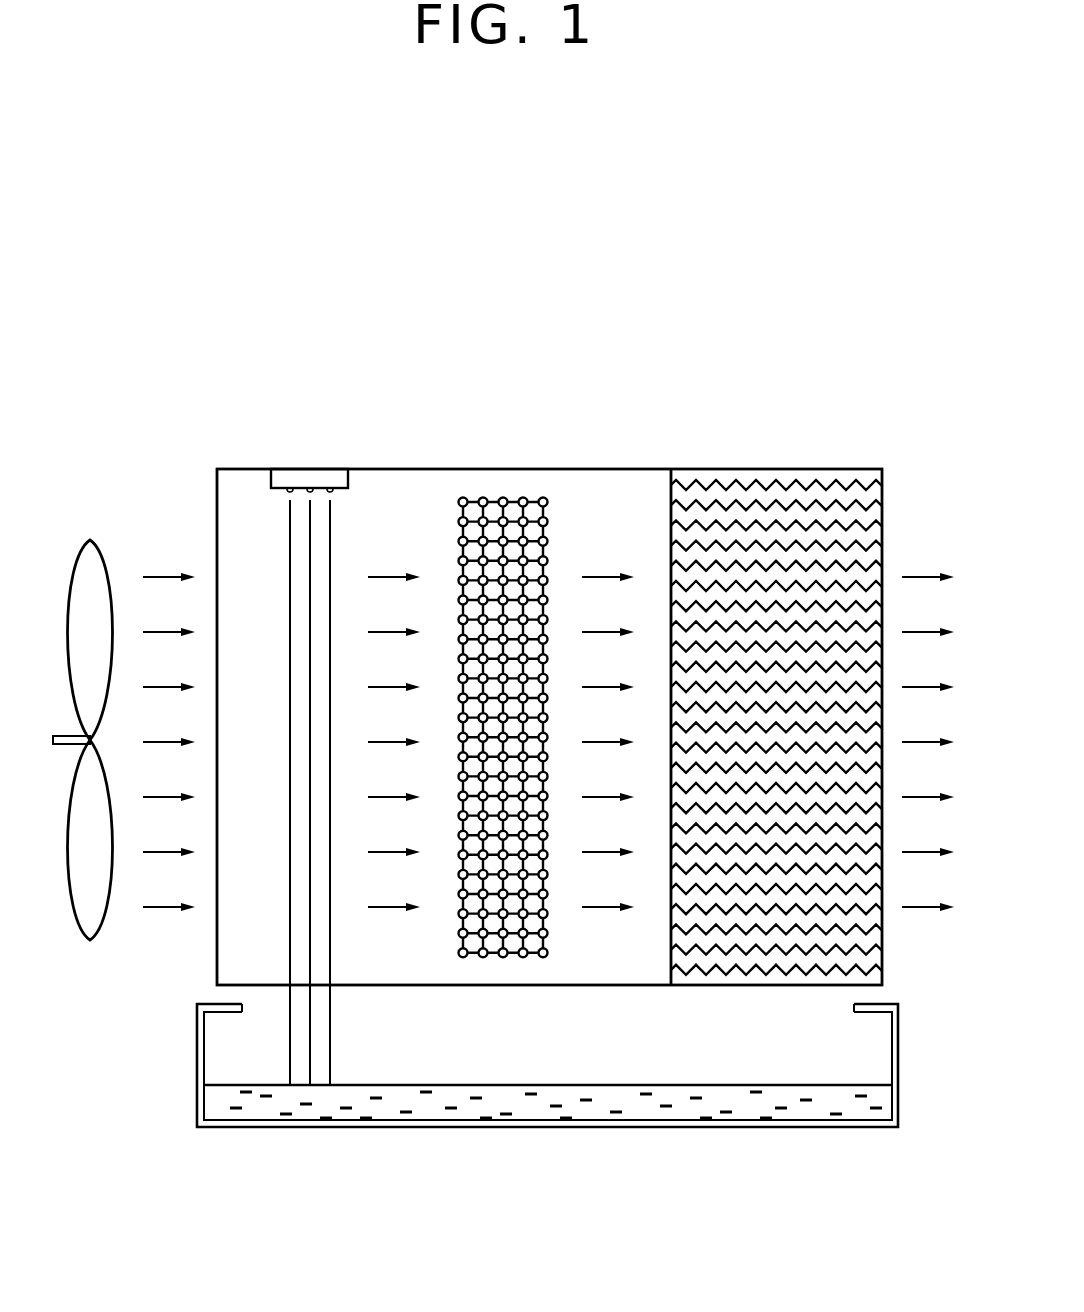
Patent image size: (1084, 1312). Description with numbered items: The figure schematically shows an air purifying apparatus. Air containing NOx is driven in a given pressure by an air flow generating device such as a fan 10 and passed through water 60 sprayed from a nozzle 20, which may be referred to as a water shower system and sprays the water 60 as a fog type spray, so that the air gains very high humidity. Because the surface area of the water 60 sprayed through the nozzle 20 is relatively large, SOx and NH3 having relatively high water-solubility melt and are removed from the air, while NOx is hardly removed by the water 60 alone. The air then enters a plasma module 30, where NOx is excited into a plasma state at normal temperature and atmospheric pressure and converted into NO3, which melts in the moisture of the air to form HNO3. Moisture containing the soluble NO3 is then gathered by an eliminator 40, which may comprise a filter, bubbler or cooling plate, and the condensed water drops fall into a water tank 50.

The fan 10 is at (90, 556).
The nozzle 20 is at (311, 478).
The plasma module 30 is at (503, 500).
The eliminator 40 is at (779, 476).
The water tank 50 is at (197, 1043).
The water 60 is at (548, 1105).